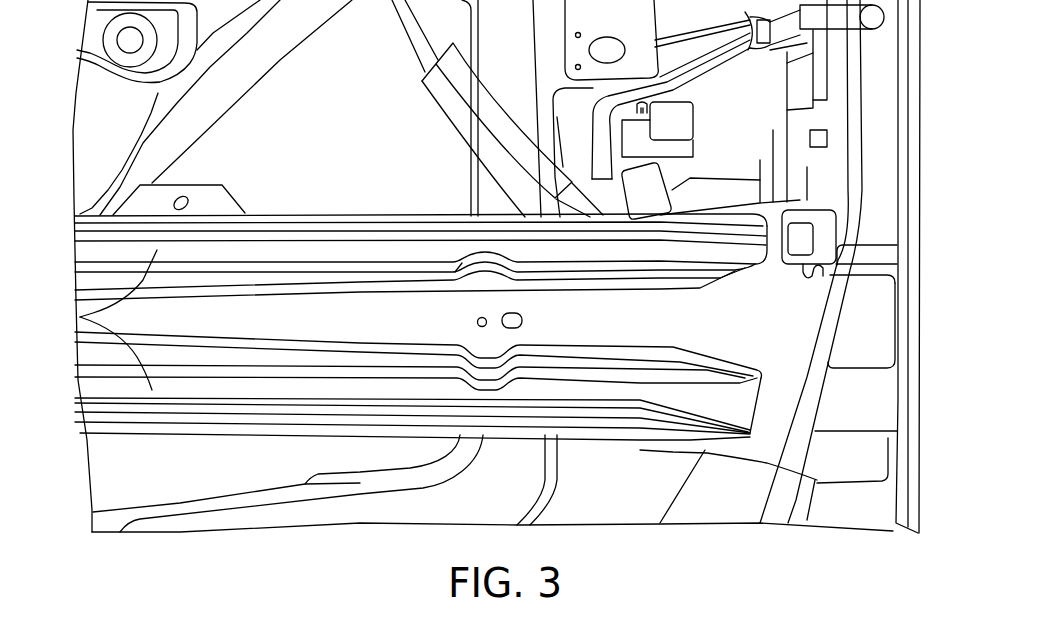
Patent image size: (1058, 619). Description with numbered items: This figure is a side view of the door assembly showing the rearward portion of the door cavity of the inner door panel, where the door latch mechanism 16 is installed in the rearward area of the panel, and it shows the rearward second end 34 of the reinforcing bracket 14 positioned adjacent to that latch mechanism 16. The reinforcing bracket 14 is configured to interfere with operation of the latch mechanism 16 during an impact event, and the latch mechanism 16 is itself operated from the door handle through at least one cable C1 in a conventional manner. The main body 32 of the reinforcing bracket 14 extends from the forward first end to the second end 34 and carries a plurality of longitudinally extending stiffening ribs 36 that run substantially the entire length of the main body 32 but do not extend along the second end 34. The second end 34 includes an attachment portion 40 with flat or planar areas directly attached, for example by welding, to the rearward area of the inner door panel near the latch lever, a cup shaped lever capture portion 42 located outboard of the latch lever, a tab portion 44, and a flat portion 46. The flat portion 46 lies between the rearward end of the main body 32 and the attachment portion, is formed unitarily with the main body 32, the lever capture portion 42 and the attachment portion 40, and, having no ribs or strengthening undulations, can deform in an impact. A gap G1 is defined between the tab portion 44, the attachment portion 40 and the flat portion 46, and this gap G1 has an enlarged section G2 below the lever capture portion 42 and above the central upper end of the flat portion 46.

The reinforcing bracket 14 is at (338, 214).
The door latch mechanism 16 is at (718, 193).
The main body 32 is at (288, 232).
The second end 34 is at (870, 312).
The stiffening ribs 36 is at (80, 317).
The attachment portion 40 is at (865, 346).
The lever capture portion 42 is at (793, 244).
The tab portion 44 is at (897, 247).
The flat portion 46 is at (777, 407).
The cable C1 is at (433, 107).
The gap G1 is at (840, 278).
The enlarged section G2 is at (811, 273).